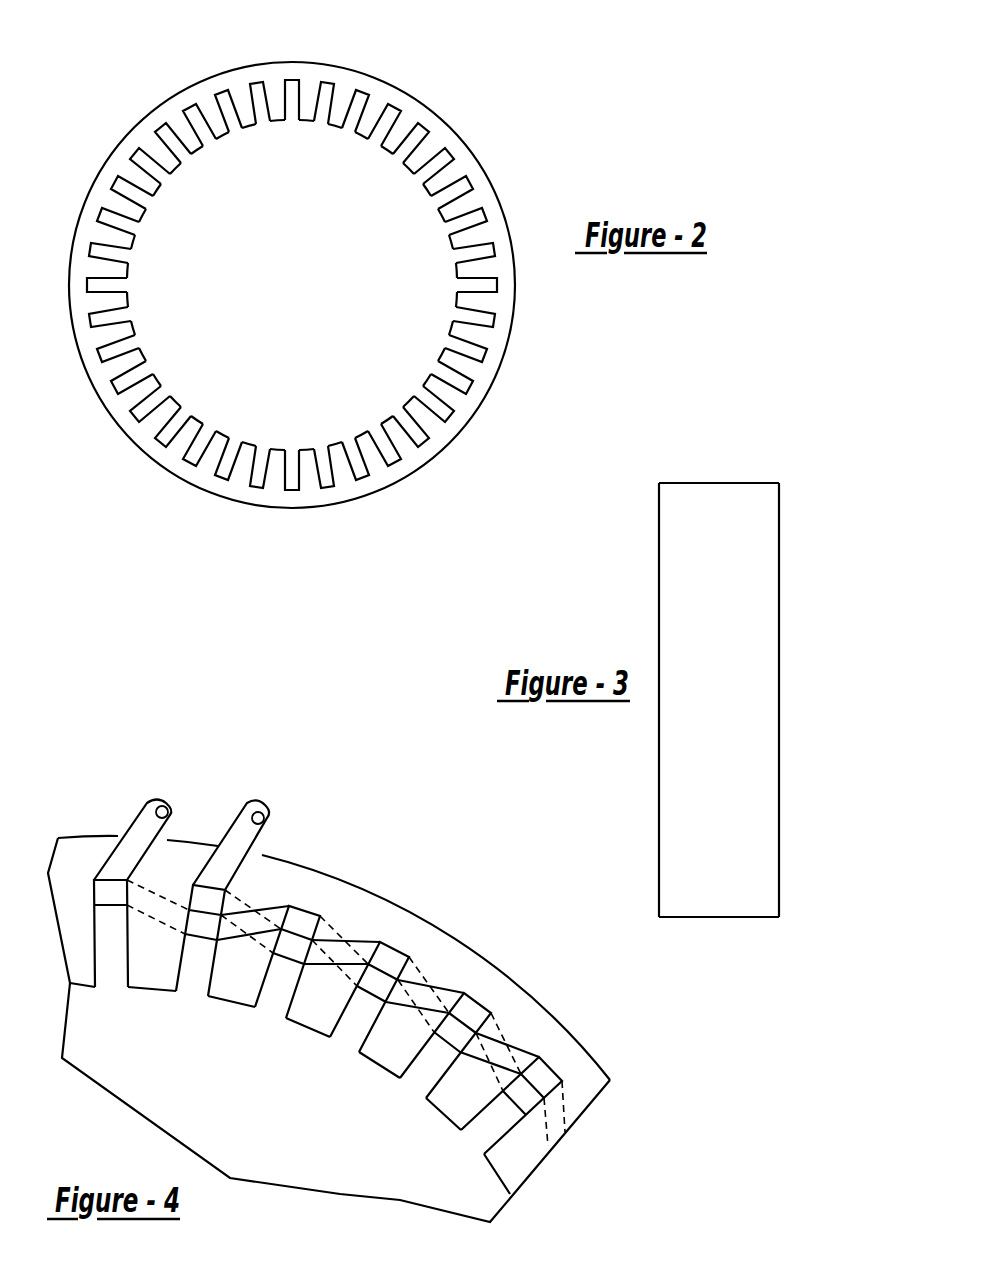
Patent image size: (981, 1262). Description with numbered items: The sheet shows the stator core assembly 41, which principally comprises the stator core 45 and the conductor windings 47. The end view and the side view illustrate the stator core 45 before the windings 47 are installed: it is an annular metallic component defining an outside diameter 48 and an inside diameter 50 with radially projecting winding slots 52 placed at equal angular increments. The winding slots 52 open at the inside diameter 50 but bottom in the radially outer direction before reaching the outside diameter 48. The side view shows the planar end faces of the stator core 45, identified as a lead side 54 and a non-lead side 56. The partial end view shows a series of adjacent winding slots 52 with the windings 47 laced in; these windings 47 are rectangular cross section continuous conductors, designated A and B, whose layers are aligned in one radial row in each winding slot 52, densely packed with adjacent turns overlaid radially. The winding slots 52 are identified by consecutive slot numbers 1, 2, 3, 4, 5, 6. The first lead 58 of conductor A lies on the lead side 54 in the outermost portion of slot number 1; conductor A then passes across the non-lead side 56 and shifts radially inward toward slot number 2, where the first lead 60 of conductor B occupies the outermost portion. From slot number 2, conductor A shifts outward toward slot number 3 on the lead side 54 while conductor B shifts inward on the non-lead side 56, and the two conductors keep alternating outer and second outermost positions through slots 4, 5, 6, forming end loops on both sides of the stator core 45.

In FIG. 4, the stator core assembly 41 is at (338, 963).
In FIG. 2, the stator core 45 is at (316, 307).
In FIG. 3, the stator core 45 is at (709, 737).
In FIG. 4, the stator core 45 is at (338, 963).
In FIG. 4, the conductor windings 47 is at (535, 1058).
In FIG. 2, the outside diameter 48 is at (445, 122).
In FIG. 4, the outside diameter 48 is at (485, 958).
In FIG. 2, the inside diameter 50 is at (447, 217).
In FIG. 4, the inside diameter 50 is at (232, 1003).
In FIG. 2, the winding slots 52 is at (352, 128).
In FIG. 4, the winding slots 52 is at (328, 1024).
In FIG. 2, the lead side 54 is at (337, 490).
In FIG. 3, the lead side 54 is at (659, 565).
In FIG. 3, the non-lead side 56 is at (779, 582).
In FIG. 4, the first lead of conductor A 58 is at (132, 817).
In FIG. 4, the first lead of conductor B 60 is at (230, 815).
In FIG. 4, the slot number 1 is at (111, 948).
In FIG. 4, the slot number 2 is at (200, 951).
In FIG. 4, the slot number 3 is at (287, 972).
In FIG. 4, the slot number 4 is at (369, 1005).
In FIG. 4, the slot number 5 is at (445, 1053).
In FIG. 4, the slot number 6 is at (508, 1113).